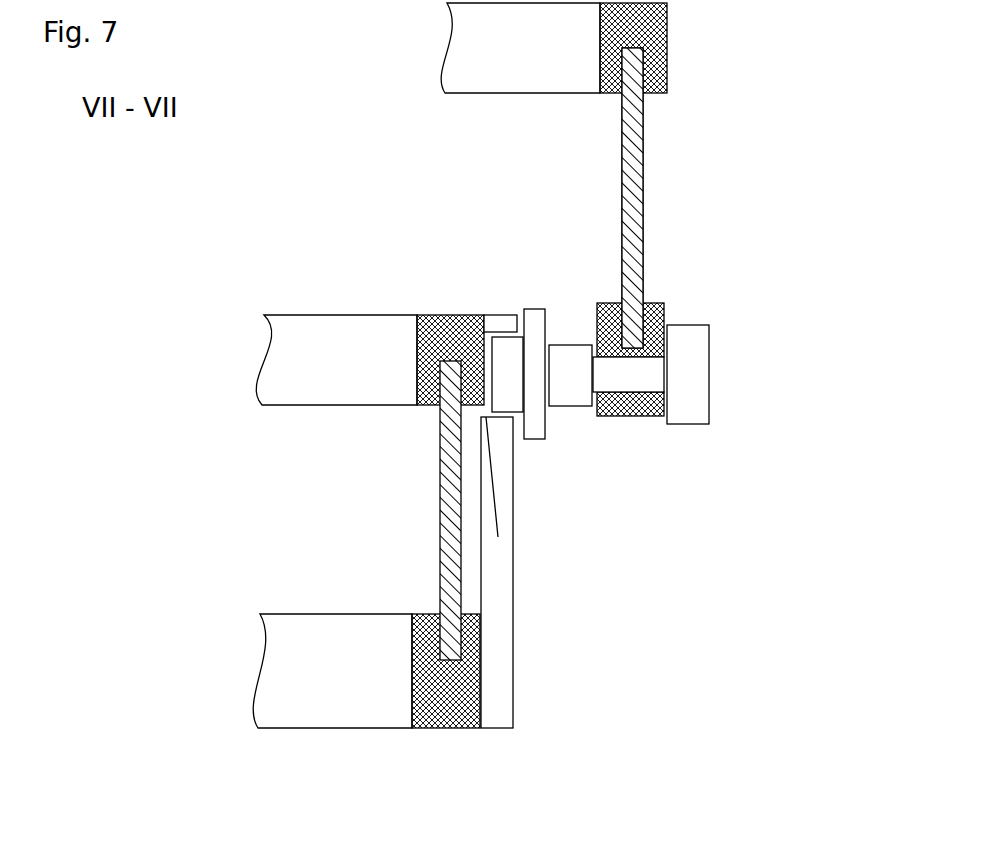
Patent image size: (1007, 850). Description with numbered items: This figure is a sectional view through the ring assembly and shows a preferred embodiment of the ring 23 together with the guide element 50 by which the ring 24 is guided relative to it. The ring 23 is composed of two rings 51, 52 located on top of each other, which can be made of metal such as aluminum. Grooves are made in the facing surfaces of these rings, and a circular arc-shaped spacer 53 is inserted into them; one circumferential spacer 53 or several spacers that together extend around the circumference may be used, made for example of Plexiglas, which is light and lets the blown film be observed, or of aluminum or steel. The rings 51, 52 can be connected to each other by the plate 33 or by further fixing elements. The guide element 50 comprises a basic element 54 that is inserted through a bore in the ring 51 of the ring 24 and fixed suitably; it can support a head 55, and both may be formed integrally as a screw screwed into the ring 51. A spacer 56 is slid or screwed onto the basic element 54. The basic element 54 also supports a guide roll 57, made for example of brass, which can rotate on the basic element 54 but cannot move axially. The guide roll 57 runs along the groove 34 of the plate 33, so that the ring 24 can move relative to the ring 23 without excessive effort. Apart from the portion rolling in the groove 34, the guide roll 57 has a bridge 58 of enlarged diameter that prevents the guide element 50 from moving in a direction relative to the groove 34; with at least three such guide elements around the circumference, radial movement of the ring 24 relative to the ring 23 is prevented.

The ring 23 is at (392, 507).
The ring 24 is at (714, 180).
The plate 33 is at (502, 598).
The groove 34 is at (498, 537).
The guide element 50 is at (667, 434).
The ring 51 is at (655, 317).
The ring 52 is at (450, 327).
The spacer 53 is at (443, 562).
The basic element 54 is at (636, 377).
The head 55 is at (695, 375).
The spacer 56 is at (569, 377).
The guide roll 57 is at (508, 350).
The bridge 58 is at (536, 322).